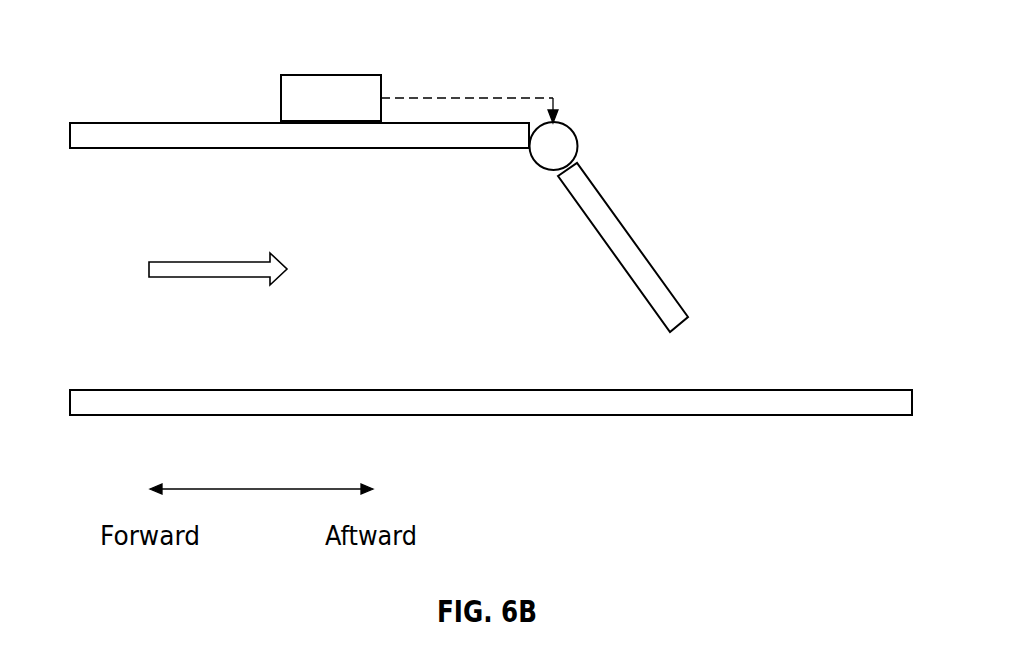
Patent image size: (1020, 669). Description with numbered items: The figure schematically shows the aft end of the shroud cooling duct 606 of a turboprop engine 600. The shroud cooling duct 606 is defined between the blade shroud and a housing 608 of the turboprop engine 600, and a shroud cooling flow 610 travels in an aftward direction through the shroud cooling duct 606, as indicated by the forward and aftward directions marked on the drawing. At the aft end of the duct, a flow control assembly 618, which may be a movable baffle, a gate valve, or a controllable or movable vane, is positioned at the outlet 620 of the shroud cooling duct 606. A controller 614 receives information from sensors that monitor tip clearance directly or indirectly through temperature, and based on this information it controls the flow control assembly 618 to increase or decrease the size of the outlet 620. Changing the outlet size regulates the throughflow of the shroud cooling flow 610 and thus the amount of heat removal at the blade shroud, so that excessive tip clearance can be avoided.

The turboprop engine 600 is at (856, 198).
The shroud cooling duct 606 is at (437, 318).
The housing 608 is at (237, 128).
The shroud cooling flow 610 is at (237, 272).
The controller 614 is at (313, 87).
The flow control assembly 618 is at (665, 204).
The outlet 620 is at (699, 344).